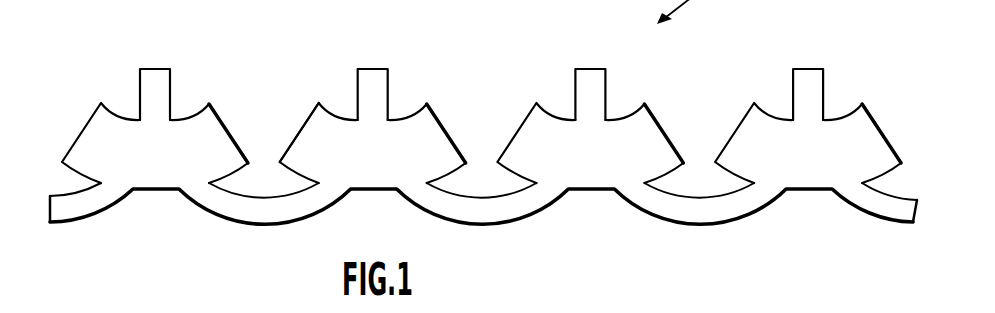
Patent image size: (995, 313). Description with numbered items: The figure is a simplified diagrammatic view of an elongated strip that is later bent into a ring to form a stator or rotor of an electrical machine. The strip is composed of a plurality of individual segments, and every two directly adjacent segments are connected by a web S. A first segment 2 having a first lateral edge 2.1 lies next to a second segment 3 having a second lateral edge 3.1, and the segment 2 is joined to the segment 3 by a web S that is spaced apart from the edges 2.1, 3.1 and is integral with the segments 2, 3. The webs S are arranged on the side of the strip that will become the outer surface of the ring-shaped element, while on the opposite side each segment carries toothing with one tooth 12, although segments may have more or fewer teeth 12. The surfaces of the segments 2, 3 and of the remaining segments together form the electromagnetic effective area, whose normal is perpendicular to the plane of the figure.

The first segment 2 is at (92, 132).
The first lateral edge 2.1 is at (240, 130).
The second segment 3 is at (441, 134).
The second lateral edge 3.1 is at (300, 131).
The tooth 12 is at (157, 76).
The web S is at (250, 212).